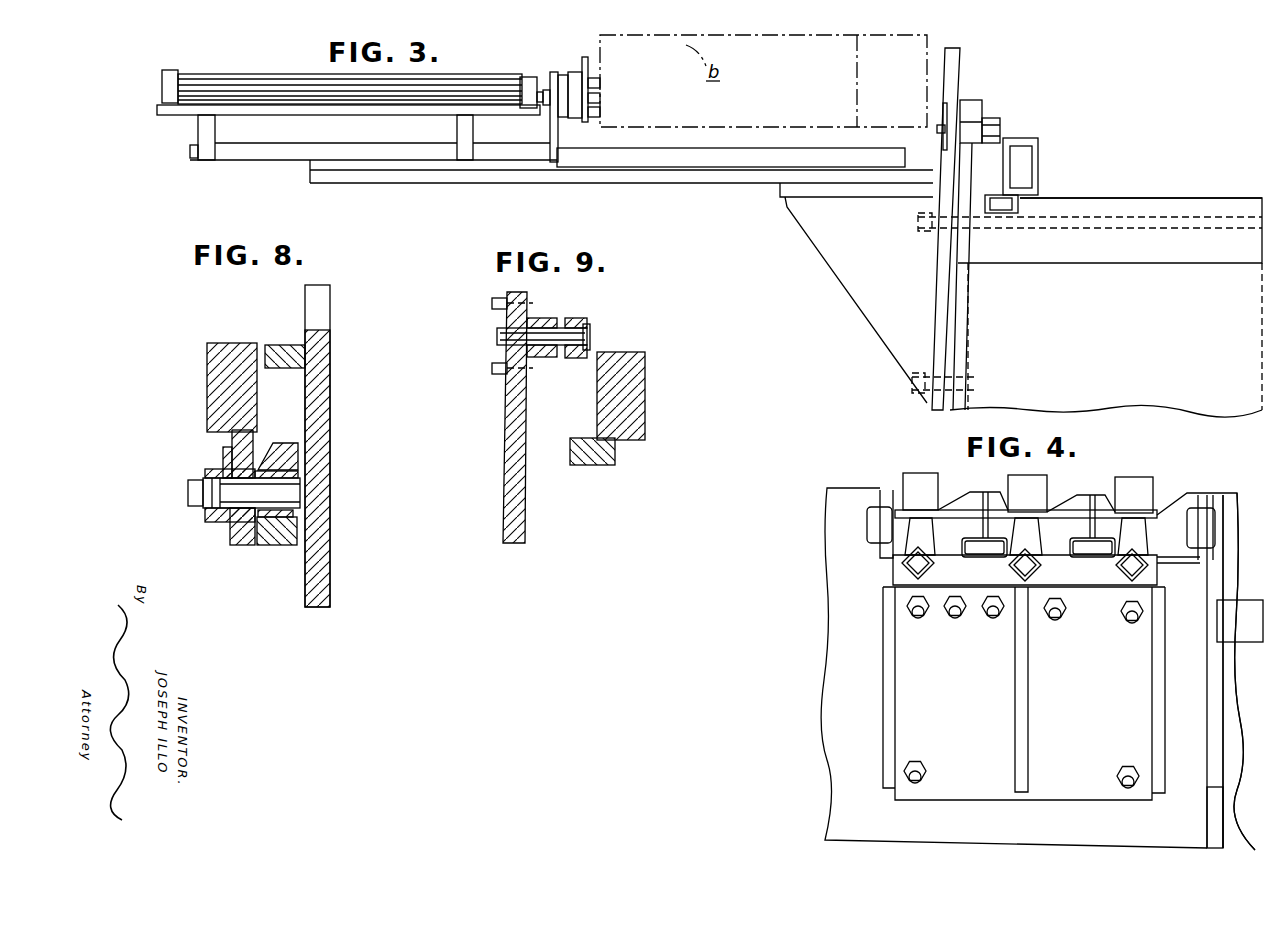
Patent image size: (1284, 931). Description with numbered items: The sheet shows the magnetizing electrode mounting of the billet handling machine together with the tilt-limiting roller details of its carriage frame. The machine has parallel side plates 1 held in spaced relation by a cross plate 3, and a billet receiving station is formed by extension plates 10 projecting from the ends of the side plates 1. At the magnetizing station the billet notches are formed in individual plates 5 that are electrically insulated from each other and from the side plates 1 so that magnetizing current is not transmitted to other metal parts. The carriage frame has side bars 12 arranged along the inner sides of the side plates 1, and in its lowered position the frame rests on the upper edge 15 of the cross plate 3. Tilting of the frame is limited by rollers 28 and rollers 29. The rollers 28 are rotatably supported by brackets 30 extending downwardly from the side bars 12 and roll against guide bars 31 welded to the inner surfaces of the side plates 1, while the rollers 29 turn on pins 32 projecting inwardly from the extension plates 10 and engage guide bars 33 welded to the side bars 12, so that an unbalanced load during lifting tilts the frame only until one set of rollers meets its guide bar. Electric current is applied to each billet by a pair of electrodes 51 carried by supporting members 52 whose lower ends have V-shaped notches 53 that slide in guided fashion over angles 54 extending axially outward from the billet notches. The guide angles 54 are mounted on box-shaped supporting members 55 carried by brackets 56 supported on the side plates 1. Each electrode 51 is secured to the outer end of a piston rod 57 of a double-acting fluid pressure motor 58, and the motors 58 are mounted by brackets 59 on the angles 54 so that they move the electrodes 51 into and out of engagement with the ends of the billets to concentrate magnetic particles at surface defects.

In FIG. 3, the side plate 1 is at (967, 102).
In FIG. 8, the side plate 1 is at (326, 367).
In FIG. 3, the cross plate 3 is at (1198, 205).
In FIG. 4, the individual plate 5 is at (974, 492).
In FIG. 3, the extension plate 10 is at (962, 69).
In FIG. 9, the extension plate 10 is at (507, 418).
In FIG. 4, the extension plate 10 is at (1238, 508).
In FIG. 3, the side bar 12 is at (1040, 163).
In FIG. 8, the side bar 12 is at (207, 383).
In FIG. 9, the side bar 12 is at (646, 393).
In FIG. 3, the upper edge of cross plate 15 is at (1128, 198).
In FIG. 8, the roller 28 is at (285, 443).
In FIG. 3, the roller 29 is at (998, 120).
In FIG. 9, the roller 29 is at (578, 318).
In FIG. 8, the bracket 30 is at (240, 546).
In FIG. 8, the guide bar 31 is at (280, 345).
In FIG. 9, the pin 32 is at (590, 336).
In FIG. 3, the guide bar 33 is at (1003, 214).
In FIG. 9, the guide bar 33 is at (598, 466).
In FIG. 3, the electrode 51 is at (578, 72).
In FIG. 3, the supporting member 52 is at (550, 133).
In FIG. 3, the V-shaped notch 53 is at (556, 156).
In FIG. 4, the V-shaped notch 53 is at (902, 571).
In FIG. 3, the angle 54 is at (663, 158).
In FIG. 4, the angle 54 is at (1033, 548).
In FIG. 3, the box-shaped supporting member 55 is at (733, 182).
In FIG. 4, the box-shaped supporting member 55 is at (1007, 568).
In FIG. 3, the bracket 56 is at (853, 290).
In FIG. 4, the bracket 56 is at (969, 685).
In FIG. 3, the piston rod 57 is at (545, 89).
In FIG. 3, the double-acting fluid pressure motor 58 is at (228, 75).
In FIG. 4, the double-acting fluid pressure motor 58 is at (908, 480).
In FIG. 3, the bracket 59 is at (198, 128).
In FIG. 4, the bracket 59 is at (928, 537).